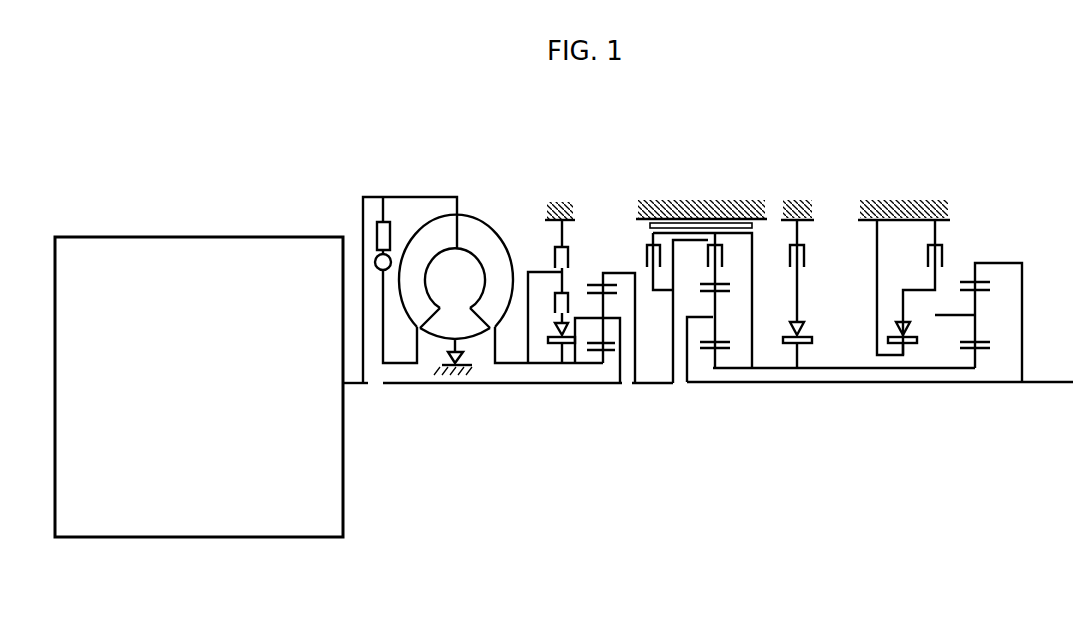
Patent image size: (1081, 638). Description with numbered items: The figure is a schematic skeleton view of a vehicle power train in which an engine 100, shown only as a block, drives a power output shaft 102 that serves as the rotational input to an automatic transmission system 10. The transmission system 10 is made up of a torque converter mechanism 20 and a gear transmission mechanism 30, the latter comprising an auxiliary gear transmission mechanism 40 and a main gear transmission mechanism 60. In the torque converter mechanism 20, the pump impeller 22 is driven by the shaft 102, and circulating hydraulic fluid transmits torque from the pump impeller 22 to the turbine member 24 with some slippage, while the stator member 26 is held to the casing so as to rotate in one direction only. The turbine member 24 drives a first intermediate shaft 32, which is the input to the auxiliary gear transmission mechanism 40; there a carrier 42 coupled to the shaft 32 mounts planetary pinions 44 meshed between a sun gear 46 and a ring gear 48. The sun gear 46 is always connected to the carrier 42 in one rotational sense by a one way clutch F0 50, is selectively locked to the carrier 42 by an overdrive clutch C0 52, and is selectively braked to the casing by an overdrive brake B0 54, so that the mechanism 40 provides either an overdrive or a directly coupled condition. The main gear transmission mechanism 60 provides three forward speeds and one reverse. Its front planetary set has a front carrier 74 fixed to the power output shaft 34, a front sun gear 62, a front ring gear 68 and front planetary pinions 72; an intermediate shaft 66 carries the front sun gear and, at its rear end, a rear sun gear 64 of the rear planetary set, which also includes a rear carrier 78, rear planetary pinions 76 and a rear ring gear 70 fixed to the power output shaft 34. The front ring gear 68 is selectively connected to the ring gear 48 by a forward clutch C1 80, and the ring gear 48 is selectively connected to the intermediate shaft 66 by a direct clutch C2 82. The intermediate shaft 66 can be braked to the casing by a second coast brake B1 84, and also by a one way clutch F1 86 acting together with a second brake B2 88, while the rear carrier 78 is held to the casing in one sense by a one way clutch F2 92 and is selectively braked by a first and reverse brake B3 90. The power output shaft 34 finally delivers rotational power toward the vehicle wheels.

The automatic transmission system 10 is at (772, 202).
The torque converter mechanism 20 is at (492, 278).
The pump impeller 22 is at (483, 237).
The turbine member 24 is at (430, 238).
The stator member 26 is at (439, 328).
The gear transmission mechanism 30 is at (682, 391).
The first intermediate shaft 32 is at (480, 385).
The power output shaft 34 is at (1060, 383).
The auxiliary gear transmission mechanism 40 is at (606, 372).
The carrier 42 is at (577, 364).
The planetary pinions 44 is at (615, 298).
The sun gear 46 is at (615, 350).
The ring gear 48 is at (600, 285).
The one way clutch (F0) 50 is at (561, 364).
The overdrive clutch (C0) 52 is at (554, 303).
The overdrive brake (B0) 54 is at (554, 256).
The main gear transmission mechanism 60 is at (778, 378).
The front sun gear 62 is at (693, 387).
The rear sun gear 64 is at (978, 370).
The intermediate shaft 66 is at (830, 385).
The front ring gear 68 is at (690, 311).
The rear ring gear 70 is at (977, 270).
The front planetary pinions 72 is at (716, 292).
The front carrier 74 is at (697, 318).
The rear planetary pinions 76 is at (985, 292).
The rear carrier 78 is at (975, 318).
The forward clutch (C1) 80 is at (718, 233).
The direct clutch (C2) 82 is at (647, 245).
The second coast brake (B1) 84 is at (684, 228).
The one way clutch (F1) 86 is at (800, 322).
The second brake (B2) 88 is at (804, 252).
The first and reverse brake (B3) 90 is at (928, 257).
The one way clutch (F2) 92 is at (890, 347).
The engine 100 is at (192, 237).
The power output shaft 102 is at (357, 386).
The overdrive brake B0 is at (571, 247).
The second coast brake B1 is at (708, 284).
The second brake B2 is at (809, 261).
The first and reverse brake B3 is at (916, 277).
The overdrive clutch C0 is at (548, 317).
The forward clutch C1 is at (728, 300).
The direct clutch C2 is at (645, 261).
The one way clutch F0 is at (553, 344).
The one way clutch F1 is at (812, 345).
The one way clutch F2 is at (915, 339).